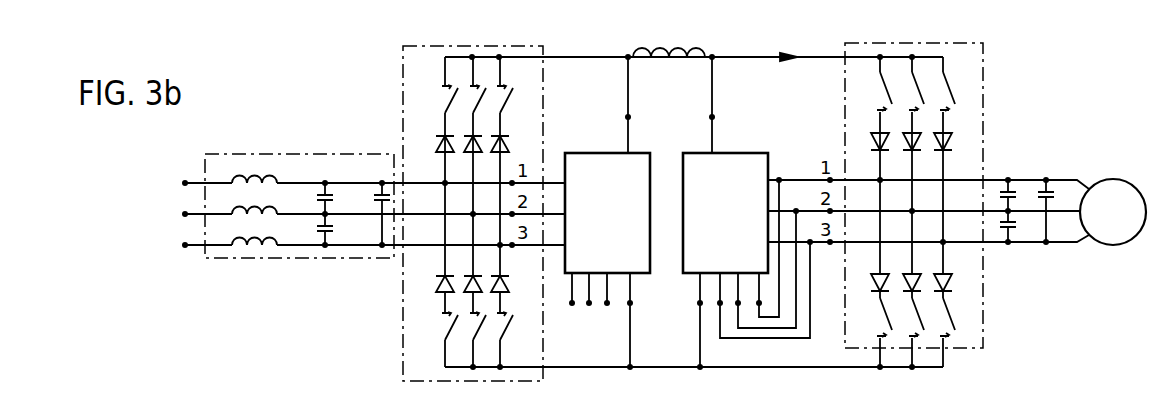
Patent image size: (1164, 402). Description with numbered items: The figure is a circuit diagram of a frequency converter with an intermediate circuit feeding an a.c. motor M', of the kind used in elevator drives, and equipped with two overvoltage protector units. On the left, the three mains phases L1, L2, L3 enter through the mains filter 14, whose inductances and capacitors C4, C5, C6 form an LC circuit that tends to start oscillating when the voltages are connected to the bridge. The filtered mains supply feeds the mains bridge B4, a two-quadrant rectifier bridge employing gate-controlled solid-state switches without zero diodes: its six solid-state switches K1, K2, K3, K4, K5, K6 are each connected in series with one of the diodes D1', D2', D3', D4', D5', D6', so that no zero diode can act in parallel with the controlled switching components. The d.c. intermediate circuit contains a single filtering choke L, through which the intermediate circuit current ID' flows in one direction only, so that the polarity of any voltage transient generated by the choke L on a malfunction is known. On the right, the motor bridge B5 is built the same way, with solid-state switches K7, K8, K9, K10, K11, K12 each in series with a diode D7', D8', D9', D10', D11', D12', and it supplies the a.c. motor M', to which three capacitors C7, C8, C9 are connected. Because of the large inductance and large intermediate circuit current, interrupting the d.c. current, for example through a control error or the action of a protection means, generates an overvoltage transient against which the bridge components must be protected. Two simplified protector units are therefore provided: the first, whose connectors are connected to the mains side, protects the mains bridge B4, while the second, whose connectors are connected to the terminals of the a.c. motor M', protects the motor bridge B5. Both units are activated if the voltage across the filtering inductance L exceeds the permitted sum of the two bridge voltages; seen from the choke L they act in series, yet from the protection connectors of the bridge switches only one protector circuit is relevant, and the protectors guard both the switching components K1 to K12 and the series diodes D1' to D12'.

The mains filter 14 is at (322, 151).
The mains phase L1 is at (214, 183).
The mains phase L2 is at (214, 214).
The mains phase L3 is at (214, 245).
The filter capacitor C4 is at (312, 198).
The filter capacitor C5 is at (369, 214).
The filter capacitor C6 is at (312, 229).
The mains bridge B4 is at (478, 45).
The solid-state switch K1 is at (442, 101).
The solid-state switch K2 is at (455, 336).
The solid-state switch K3 is at (470, 101).
The solid-state switch K4 is at (483, 336).
The solid-state switch K5 is at (498, 101).
The solid-state switch K6 is at (511, 336).
The diode D1' is at (437, 159).
The diode D2' is at (437, 271).
The diode D3' is at (465, 159).
The diode D4' is at (465, 271).
The diode D5' is at (492, 159).
The diode D6' is at (492, 271).
The filtering choke L is at (669, 40).
The intermediate circuit current ID' is at (783, 44).
The motor bridge B5 is at (920, 42).
The solid-state switch K7 is at (873, 90).
The solid-state switch K8 is at (892, 314).
The solid-state switch K9 is at (905, 90).
The solid-state switch K10 is at (925, 314).
The solid-state switch K11 is at (936, 90).
The solid-state switch K12 is at (957, 314).
The diode D7' is at (890, 157).
The diode D8' is at (872, 271).
The diode D9' is at (922, 157).
The diode D10' is at (903, 271).
The diode D11' is at (955, 157).
The diode D12' is at (934, 271).
The motor capacitor C7 is at (999, 195).
The motor capacitor C8 is at (1037, 211).
The motor capacitor C9 is at (1022, 226).
The a.c. motor M' is at (1113, 212).